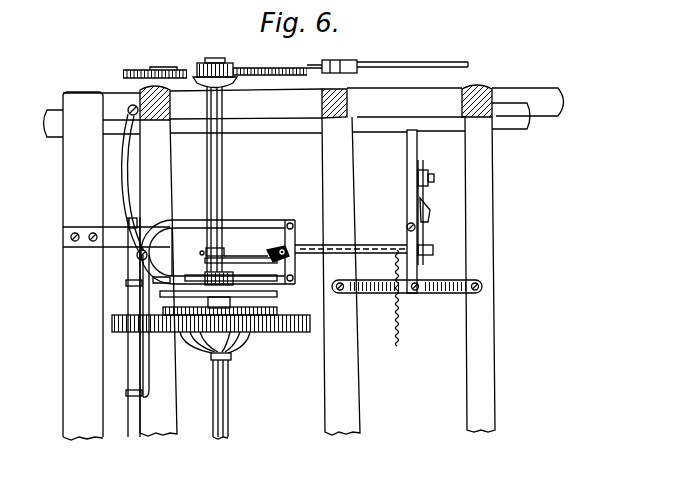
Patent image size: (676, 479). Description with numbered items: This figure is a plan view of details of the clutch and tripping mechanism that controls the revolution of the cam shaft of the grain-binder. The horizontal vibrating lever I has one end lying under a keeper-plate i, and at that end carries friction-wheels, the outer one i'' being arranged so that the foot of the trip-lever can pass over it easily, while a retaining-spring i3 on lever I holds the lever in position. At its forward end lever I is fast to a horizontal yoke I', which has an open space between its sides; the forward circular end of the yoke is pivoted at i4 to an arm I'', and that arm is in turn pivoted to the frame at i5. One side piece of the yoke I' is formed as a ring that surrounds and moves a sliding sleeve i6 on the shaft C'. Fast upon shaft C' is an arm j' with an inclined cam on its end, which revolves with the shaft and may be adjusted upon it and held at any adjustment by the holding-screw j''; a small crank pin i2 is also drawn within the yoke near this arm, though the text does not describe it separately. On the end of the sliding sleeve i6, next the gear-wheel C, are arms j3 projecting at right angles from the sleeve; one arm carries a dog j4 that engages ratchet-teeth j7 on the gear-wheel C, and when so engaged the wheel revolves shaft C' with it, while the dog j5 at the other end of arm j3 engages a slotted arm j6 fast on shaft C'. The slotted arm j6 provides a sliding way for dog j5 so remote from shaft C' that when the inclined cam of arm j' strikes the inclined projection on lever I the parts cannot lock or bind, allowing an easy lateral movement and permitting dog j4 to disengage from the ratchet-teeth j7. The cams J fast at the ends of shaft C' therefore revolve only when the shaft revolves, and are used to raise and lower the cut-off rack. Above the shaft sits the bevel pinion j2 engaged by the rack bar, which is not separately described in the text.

The cam J is at (286, 71).
The bevel pinion on shaft j2 is at (219, 61).
The shaft C' is at (227, 263).
The pivot of arm I'' on frame B / ring i5 is at (127, 103).
The arm I'' is at (125, 183).
The pivot i4 is at (148, 255).
The horizontal yoke I' is at (224, 252).
The holding-screw j'' is at (203, 255).
The arm with inclined cam j' is at (246, 249).
The crank pin i2 is at (279, 241).
The sliding sleeve i6 is at (241, 266).
The dog j5 is at (170, 291).
The ratchet-teeth j7 is at (223, 277).
The dog j4 is at (225, 296).
The slotted arm j6 is at (206, 300).
The arms j3 is at (220, 303).
The gear-wheel C is at (211, 337).
The horizontal vibrating lever I is at (351, 242).
The keeper-plate i is at (412, 211).
The friction-wheel i'' is at (429, 213).
The retaining-spring i3 is at (399, 306).